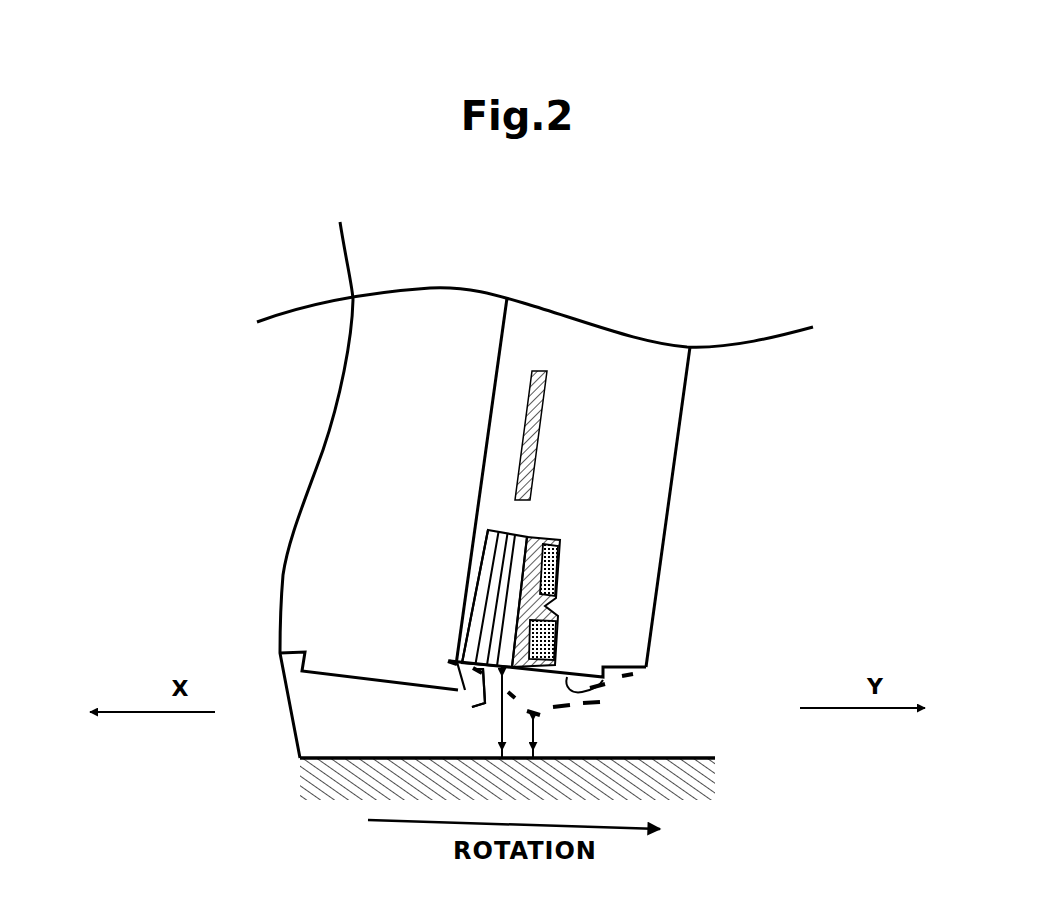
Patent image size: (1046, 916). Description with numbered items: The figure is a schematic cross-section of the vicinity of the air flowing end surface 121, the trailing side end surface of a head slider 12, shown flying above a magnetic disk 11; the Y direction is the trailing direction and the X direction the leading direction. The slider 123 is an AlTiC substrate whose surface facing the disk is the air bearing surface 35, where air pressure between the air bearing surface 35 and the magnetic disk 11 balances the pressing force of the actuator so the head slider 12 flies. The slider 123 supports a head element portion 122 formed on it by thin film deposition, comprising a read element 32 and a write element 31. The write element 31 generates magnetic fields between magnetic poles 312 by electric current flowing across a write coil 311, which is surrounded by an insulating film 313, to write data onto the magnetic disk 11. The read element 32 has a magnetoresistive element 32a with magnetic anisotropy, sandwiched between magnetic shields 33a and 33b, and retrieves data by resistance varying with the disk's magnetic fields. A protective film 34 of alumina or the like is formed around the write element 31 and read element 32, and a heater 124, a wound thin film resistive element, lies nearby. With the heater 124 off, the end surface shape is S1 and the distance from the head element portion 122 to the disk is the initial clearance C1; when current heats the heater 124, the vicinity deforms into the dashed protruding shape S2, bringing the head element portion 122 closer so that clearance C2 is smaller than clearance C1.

The magnetic disk 11 is at (685, 758).
The head slider 12 is at (568, 292).
The air flowing end surface 121 is at (685, 408).
The head element portion 122 is at (716, 507).
The slider 123 is at (297, 567).
The heater 124 is at (535, 444).
The write element 31 is at (656, 602).
The write coil 311 is at (561, 544).
The magnetic poles 312 is at (561, 633).
The insulating film 313 is at (561, 573).
The read element 32 is at (455, 696).
The magnetoresistive element 32a is at (486, 704).
The magnetic shield 33a is at (518, 527).
The magnetic shield 33b is at (482, 547).
The protective film 34 is at (507, 363).
The air bearing surface 35 is at (352, 679).
The initial clearance C1 is at (486, 712).
The clearance C2 is at (555, 734).
The end surface shape in heater OFF state S1 is at (607, 688).
The protruding shape S2 is at (600, 702).